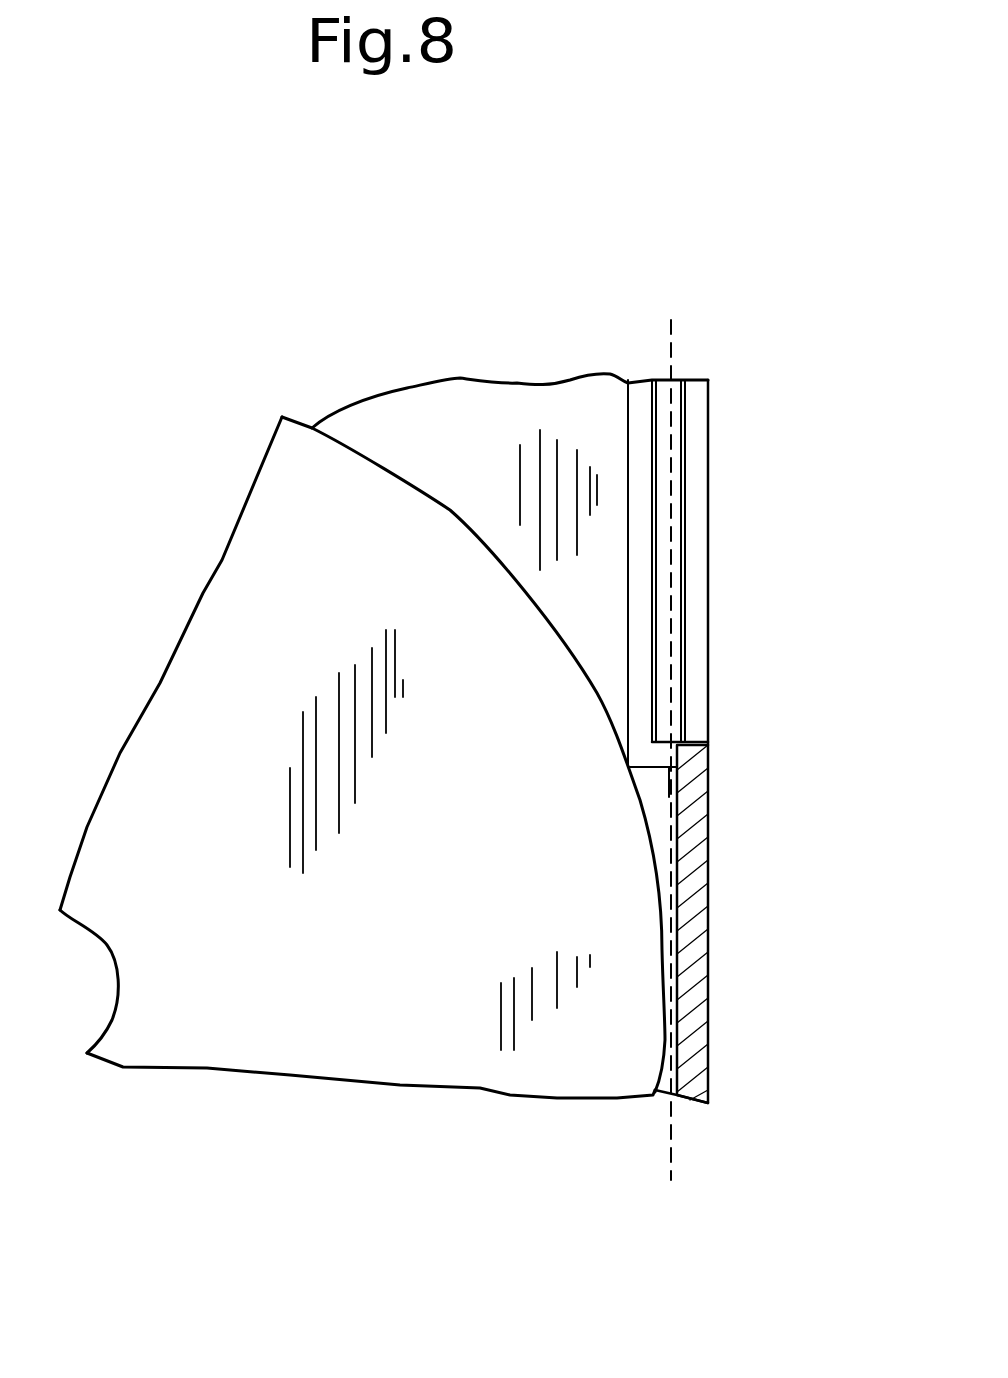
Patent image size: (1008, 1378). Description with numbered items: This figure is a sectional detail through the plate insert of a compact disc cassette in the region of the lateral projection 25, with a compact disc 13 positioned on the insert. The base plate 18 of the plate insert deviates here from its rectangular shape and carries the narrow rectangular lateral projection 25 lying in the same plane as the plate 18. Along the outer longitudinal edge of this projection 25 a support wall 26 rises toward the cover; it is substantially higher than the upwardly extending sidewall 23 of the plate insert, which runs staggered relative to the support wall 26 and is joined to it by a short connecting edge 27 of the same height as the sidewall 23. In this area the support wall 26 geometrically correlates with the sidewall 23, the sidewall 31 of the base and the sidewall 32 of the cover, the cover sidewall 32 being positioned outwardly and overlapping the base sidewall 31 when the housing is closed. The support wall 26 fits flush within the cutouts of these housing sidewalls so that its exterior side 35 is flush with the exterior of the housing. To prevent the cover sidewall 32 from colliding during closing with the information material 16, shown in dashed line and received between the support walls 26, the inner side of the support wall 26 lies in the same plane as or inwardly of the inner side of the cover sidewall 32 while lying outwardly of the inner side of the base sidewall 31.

The compact disc 13 is at (574, 1040).
The information material 16 is at (660, 850).
The base plate 18 is at (417, 425).
The upwardly extending sidewall 23 is at (640, 480).
The lateral projection 25 is at (655, 795).
The support wall 26 is at (695, 935).
The connecting edge 27 is at (655, 760).
The sidewall of the base 31 is at (668, 495).
The sidewall of the cover 32 is at (693, 400).
The exterior side of the support wall 35 is at (710, 1045).